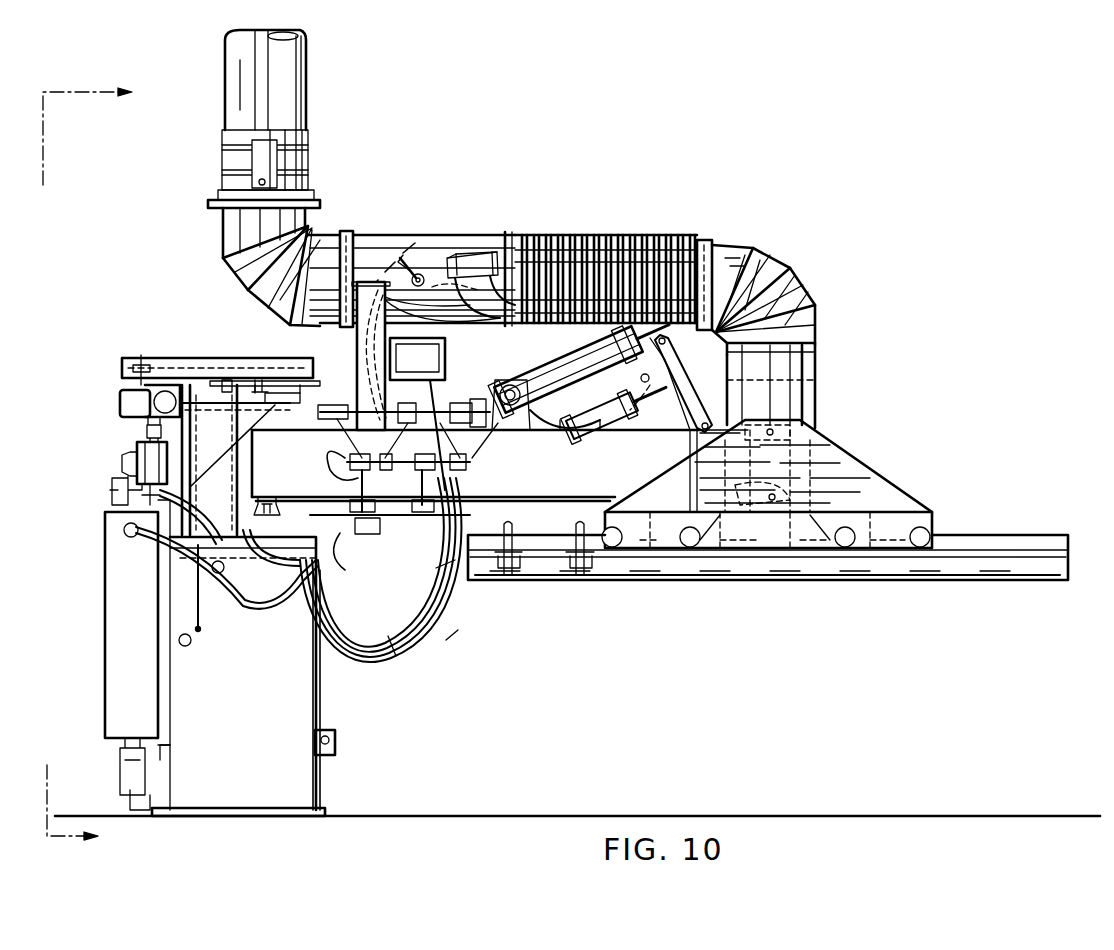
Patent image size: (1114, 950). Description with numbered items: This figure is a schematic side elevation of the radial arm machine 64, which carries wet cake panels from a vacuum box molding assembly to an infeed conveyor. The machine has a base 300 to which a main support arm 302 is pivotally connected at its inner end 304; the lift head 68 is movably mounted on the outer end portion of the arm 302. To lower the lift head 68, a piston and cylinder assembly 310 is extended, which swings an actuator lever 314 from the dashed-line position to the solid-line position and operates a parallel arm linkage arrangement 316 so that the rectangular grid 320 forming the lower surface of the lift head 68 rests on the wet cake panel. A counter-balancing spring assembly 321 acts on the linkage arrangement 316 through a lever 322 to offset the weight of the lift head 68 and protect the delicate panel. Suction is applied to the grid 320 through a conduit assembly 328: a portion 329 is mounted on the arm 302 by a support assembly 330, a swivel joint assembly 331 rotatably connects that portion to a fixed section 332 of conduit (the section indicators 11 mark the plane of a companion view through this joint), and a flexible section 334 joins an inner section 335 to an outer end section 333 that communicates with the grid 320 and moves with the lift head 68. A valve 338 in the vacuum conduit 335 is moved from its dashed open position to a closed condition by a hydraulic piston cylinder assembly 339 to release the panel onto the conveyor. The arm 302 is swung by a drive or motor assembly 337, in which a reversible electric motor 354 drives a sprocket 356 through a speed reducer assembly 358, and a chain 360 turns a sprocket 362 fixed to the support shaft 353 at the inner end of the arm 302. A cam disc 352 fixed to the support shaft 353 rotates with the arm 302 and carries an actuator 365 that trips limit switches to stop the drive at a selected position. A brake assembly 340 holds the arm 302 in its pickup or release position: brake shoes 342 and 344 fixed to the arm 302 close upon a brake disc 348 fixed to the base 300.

The section line 11- 11 is at (106, 470).
The radial arm machine 64 is at (958, 157).
The lift head 68 is at (948, 532).
The base 300 is at (338, 715).
The main support arm 302 is at (558, 478).
The inner end 304 is at (252, 460).
The piston and cylinder assembly 310 is at (590, 425).
The actuator lever 314 is at (668, 388).
The parallel arm linkage arrangement 316 is at (818, 394).
The rectangular grid 320 is at (980, 580).
The counter-balancing spring assembly 321 is at (588, 360).
The lever 322 is at (699, 380).
The conduit assembly 328 is at (540, 184).
The portion of conduit assembly 329 is at (646, 236).
The support assembly 330 is at (369, 338).
The swivel joint assembly 331 is at (240, 190).
The fixed section of conduit 332 is at (308, 70).
The end section of conduit 333 is at (817, 318).
The flexible section of conduit 334 is at (680, 242).
The inner section of conduit 335 is at (385, 255).
The motor assembly 337 is at (136, 448).
The valve 338 is at (420, 242).
The hydraulic piston cylinder assembly 339 is at (478, 255).
The brake assembly 340 is at (375, 544).
The brake shoe 342 is at (360, 510).
The brake shoe 344 is at (382, 535).
The brake disc 348 is at (360, 564).
The cam disc 352 is at (257, 380).
The support shaft 353 is at (262, 412).
The reversible electric motor 354 is at (137, 466).
The sprocket 356 is at (124, 370).
The speed reducer assembly 358 is at (128, 398).
The chain 360 is at (165, 358).
The sprocket 362 is at (353, 355).
The pin 365 is at (226, 380).